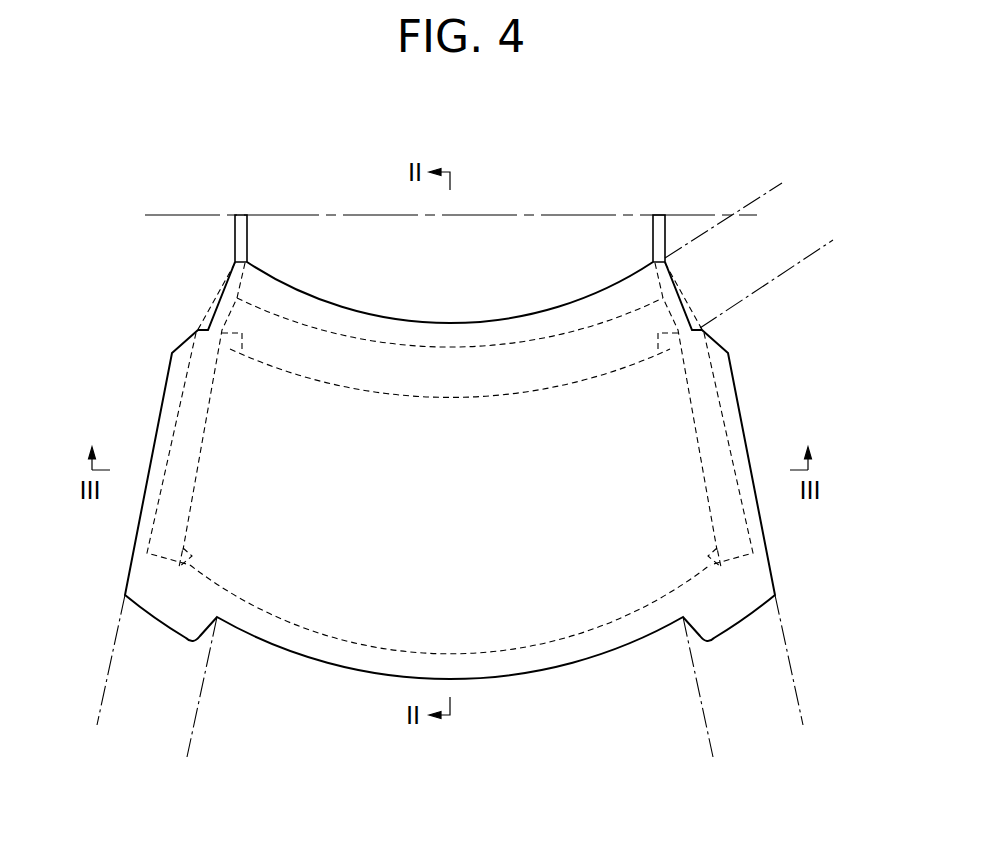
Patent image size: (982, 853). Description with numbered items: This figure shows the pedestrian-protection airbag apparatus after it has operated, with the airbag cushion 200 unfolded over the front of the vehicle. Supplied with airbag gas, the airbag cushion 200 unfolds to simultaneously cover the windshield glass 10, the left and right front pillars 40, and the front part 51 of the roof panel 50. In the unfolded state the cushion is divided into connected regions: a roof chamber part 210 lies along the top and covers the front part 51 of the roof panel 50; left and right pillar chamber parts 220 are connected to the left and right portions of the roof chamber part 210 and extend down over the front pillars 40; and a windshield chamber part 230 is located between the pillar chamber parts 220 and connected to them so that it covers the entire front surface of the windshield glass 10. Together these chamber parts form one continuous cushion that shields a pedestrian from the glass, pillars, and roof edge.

The windshield glass 10 is at (332, 615).
The front pillars 40 is at (183, 403).
The roof panel 50 is at (567, 277).
The front part of roof panel 51 is at (354, 370).
The airbag cushion 200 is at (760, 572).
The roof chamber part 210 is at (777, 187).
The pillar chamber parts 220 is at (800, 715).
The windshield chamber part 230 is at (100, 715).